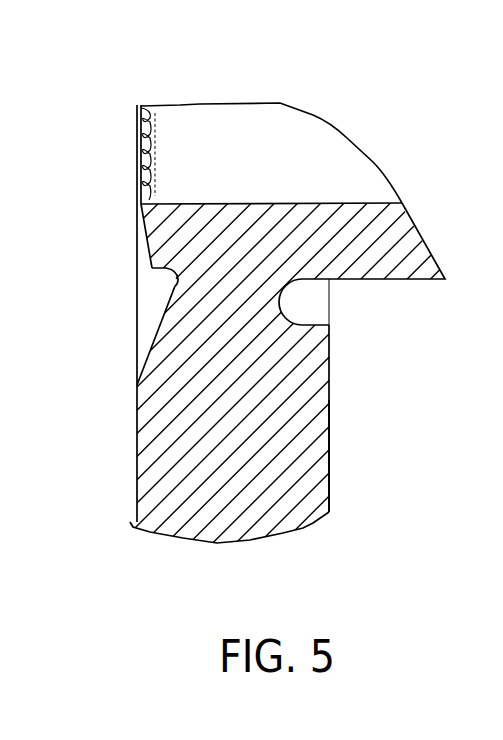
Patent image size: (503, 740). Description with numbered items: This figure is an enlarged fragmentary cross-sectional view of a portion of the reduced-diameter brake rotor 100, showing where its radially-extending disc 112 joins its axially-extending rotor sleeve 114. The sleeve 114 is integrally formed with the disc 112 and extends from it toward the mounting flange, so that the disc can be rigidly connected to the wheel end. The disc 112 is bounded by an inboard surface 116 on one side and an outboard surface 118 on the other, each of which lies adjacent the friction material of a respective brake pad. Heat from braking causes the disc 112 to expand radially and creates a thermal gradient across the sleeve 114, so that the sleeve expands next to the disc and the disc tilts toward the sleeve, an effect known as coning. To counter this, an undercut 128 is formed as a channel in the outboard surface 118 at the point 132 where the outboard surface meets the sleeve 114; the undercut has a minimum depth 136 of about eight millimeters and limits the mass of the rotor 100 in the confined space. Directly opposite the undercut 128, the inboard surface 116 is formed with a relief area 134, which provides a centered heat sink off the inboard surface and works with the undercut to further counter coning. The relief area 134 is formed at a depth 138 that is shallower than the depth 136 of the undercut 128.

The reduced-diameter brake rotor 100 is at (307, 82).
The disc 112 is at (135, 503).
The rotor sleeve 114 is at (433, 280).
The inboard surface 116 is at (137, 462).
The outboard surface 118 is at (329, 462).
The undercut 128 is at (324, 323).
The point 132 is at (277, 280).
The relief area 134 is at (146, 363).
The minimum depth 136 is at (283, 302).
The depth 138 is at (175, 281).